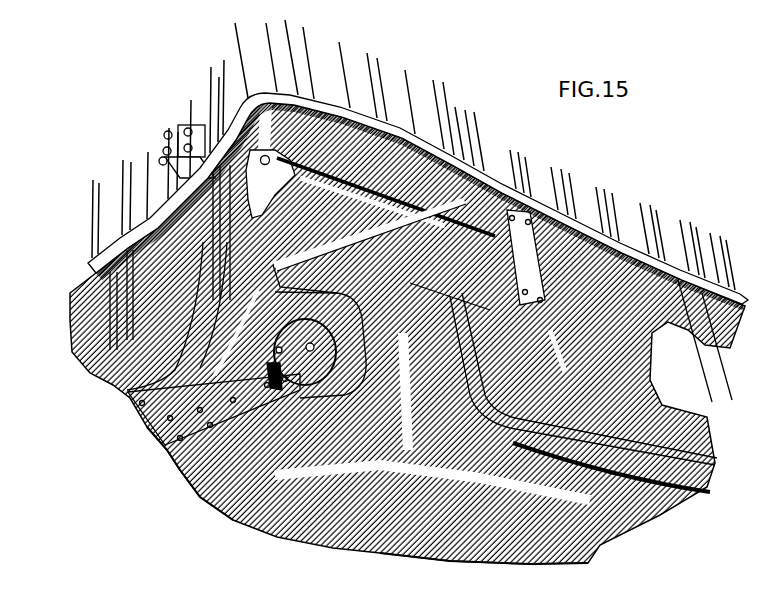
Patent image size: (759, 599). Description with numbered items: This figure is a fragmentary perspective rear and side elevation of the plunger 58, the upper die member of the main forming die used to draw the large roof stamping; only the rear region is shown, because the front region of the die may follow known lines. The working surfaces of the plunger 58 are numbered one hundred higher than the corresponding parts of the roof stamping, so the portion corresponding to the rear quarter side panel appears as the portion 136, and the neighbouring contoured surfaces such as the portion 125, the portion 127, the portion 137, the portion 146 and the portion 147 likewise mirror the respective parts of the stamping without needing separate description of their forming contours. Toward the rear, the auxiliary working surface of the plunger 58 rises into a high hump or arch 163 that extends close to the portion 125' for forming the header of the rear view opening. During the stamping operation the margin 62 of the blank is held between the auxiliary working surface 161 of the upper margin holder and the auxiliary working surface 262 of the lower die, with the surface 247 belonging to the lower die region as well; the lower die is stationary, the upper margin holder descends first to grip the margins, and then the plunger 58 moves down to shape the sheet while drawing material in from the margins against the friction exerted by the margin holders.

The plunger 58 is at (583, 273).
The margin of the blank 62 is at (585, 598).
The pan 125 is at (484, 571).
The portion for forming the header of the rear view opening 125' is at (172, 473).
The ring mount 127 is at (352, 353).
The portion corresponding to the rear quarter side panel 136 is at (447, 372).
The rod 137 is at (597, 480).
The support bar 146 is at (273, 265).
The bracket 147 is at (368, 140).
The auxiliary working surface 161 is at (590, 406).
The high hump or arch 163 is at (130, 402).
The member 247 is at (234, 598).
The auxiliary working surface 262 is at (244, 580).